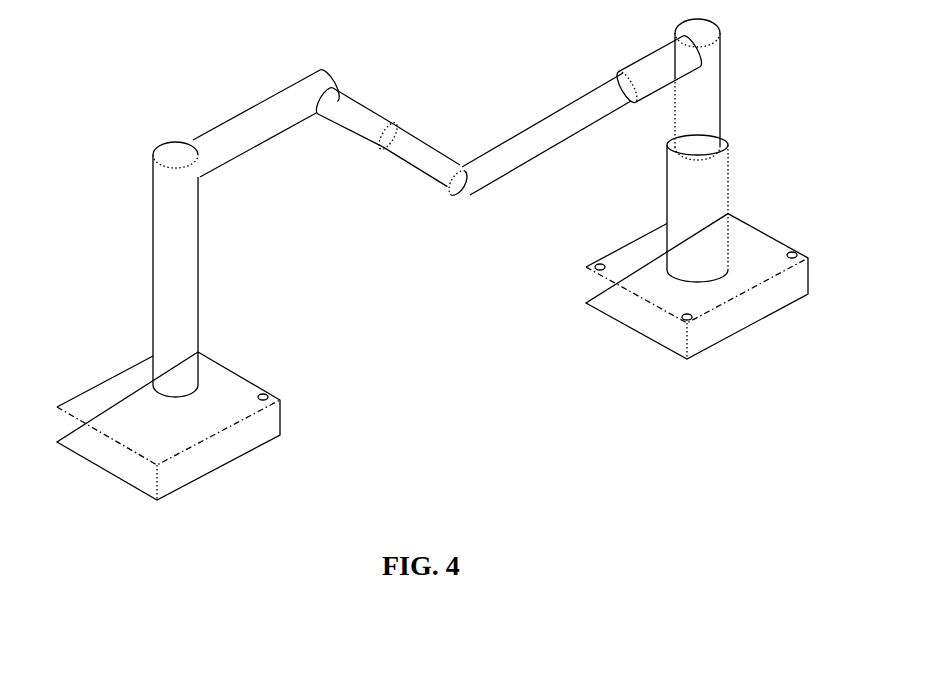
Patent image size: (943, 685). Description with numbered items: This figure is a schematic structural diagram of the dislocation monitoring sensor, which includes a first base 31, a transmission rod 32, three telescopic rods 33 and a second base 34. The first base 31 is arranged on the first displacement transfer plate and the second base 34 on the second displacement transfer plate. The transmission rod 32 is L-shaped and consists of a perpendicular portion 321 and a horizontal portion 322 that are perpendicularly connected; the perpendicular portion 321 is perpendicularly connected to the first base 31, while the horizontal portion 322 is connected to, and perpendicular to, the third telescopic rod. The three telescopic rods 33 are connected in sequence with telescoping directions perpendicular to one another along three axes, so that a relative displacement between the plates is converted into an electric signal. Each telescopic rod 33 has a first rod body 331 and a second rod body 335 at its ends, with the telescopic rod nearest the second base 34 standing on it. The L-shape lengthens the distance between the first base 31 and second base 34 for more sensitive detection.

The first base 31 is at (245, 437).
The transmission rod 32 is at (277, 233).
The perpendicular portion 321 is at (176, 287).
The horizontal portion 322 is at (247, 121).
The telescopic rod 33 is at (618, 75).
The first rod body 331 is at (707, 210).
The second rod body 335 is at (707, 118).
The second base 34 is at (752, 310).